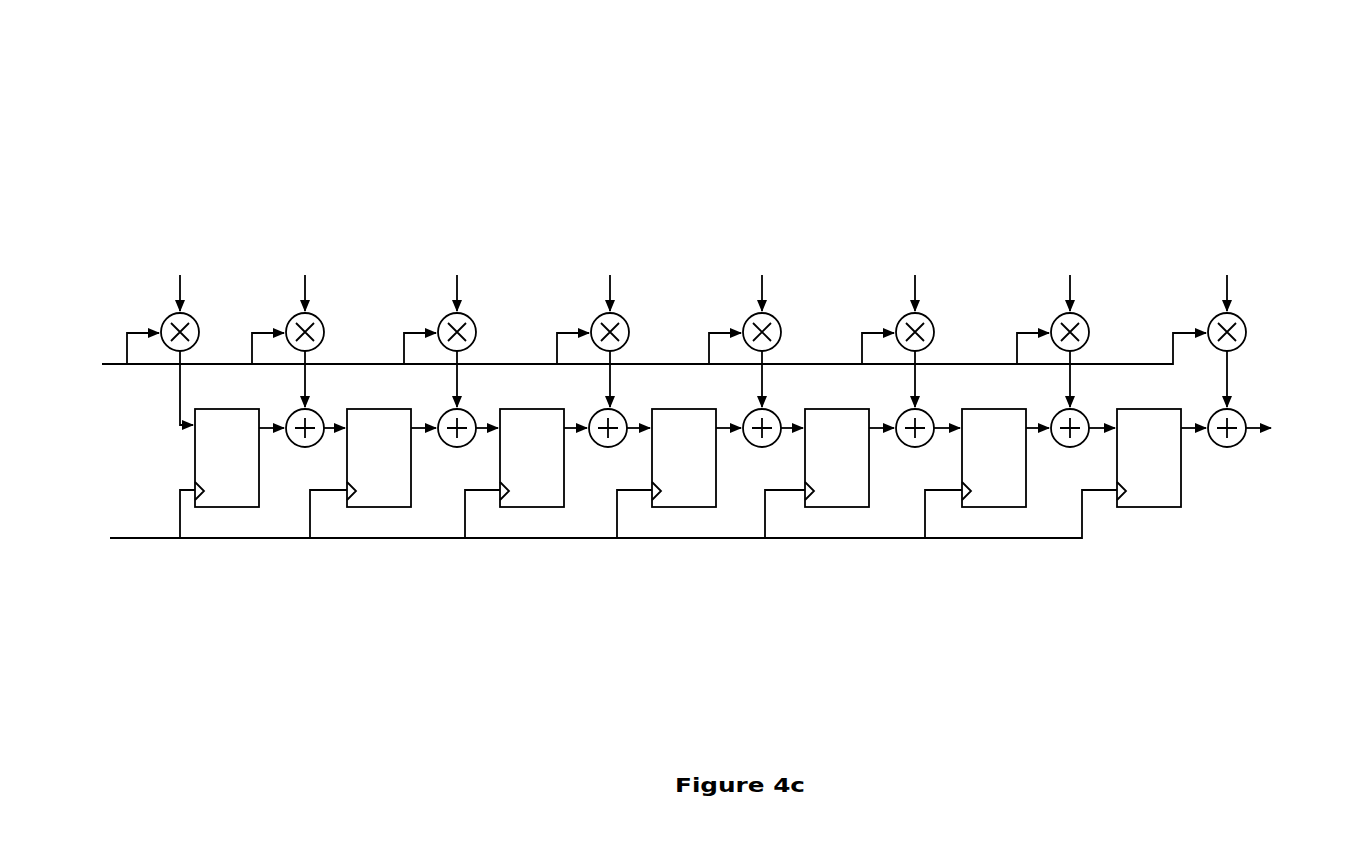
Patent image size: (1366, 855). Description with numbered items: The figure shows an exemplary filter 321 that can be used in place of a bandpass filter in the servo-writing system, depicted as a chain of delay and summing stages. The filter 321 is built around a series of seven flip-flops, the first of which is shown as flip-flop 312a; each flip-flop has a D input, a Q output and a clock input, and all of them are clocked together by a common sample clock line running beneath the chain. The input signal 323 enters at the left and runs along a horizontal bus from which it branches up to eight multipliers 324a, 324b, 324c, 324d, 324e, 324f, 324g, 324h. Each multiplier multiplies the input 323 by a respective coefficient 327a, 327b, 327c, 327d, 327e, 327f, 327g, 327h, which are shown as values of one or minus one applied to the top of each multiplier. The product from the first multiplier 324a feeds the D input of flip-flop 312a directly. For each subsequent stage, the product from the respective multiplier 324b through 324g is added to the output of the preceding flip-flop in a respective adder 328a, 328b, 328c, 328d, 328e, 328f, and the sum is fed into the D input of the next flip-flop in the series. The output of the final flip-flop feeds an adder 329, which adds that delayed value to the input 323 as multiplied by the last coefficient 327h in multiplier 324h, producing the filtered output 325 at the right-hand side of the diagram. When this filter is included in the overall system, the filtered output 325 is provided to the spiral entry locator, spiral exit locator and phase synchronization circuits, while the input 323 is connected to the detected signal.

The filter 321 is at (242, 83).
The input signal 323 is at (68, 367).
The multiplier 324a is at (237, 312).
The multiplier 324b is at (362, 312).
The multiplier 324c is at (514, 312).
The multiplier 324d is at (667, 312).
The multiplier 324e is at (819, 312).
The multiplier 324f is at (972, 312).
The multiplier 324g is at (1127, 312).
The multiplier 324h is at (1284, 312).
The coefficient 327a is at (192, 262).
The coefficient 327b is at (317, 262).
The coefficient 327c is at (471, 262).
The coefficient 327d is at (624, 262).
The coefficient 327e is at (776, 262).
The coefficient 327f is at (929, 262).
The coefficient 327g is at (1084, 262).
The coefficient 327h is at (1241, 262).
The adder 328a is at (305, 448).
The adder 328b is at (457, 448).
The adder 328c is at (608, 448).
The adder 328d is at (762, 448).
The adder 328e is at (915, 448).
The adder 328f is at (1070, 448).
The adder 329 is at (1237, 447).
The flip-flop 312a is at (250, 468).
The filtered output 325 is at (1307, 397).